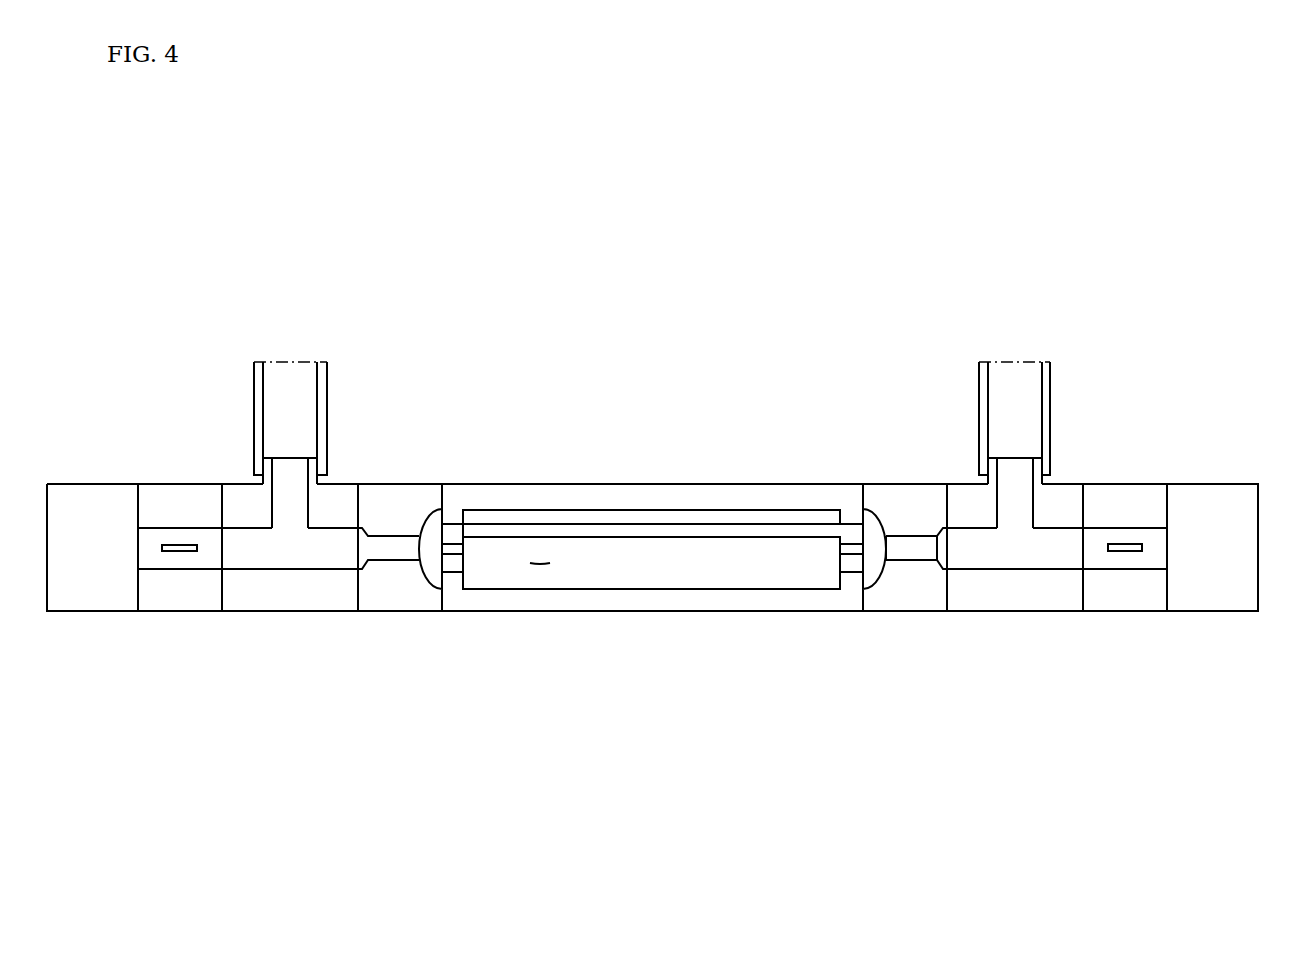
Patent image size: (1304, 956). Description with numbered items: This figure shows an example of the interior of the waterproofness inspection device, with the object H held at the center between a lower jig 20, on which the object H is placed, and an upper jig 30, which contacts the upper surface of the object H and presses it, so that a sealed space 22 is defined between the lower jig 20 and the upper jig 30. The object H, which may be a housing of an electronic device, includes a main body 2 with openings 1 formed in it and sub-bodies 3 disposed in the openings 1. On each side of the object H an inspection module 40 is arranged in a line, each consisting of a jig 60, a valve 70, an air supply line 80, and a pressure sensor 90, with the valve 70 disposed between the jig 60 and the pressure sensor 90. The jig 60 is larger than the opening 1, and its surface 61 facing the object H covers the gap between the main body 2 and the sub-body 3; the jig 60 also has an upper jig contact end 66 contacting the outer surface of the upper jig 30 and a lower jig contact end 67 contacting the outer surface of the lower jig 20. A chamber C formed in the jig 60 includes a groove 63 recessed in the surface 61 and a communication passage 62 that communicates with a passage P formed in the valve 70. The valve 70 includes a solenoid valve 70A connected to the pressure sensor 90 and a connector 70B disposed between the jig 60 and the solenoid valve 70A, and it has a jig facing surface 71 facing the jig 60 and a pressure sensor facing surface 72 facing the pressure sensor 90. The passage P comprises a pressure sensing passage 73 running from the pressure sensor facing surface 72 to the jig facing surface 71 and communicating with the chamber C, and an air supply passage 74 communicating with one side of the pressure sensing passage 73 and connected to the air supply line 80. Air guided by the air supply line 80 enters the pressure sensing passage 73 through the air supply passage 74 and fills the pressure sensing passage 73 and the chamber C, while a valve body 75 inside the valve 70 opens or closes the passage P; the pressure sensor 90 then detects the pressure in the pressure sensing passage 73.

The inspection module 40 is at (1166, 425).
The pressure sensor 90 is at (93, 603).
The valve 70 is at (167, 660).
The solenoid valve 70A is at (183, 603).
The connector 70B is at (288, 603).
The jig facing surface 71 is at (952, 603).
The pressure sensor facing surface 72 is at (1164, 597).
The pressure sensing passage 73 is at (1067, 540).
The air supply passage 74 is at (1025, 505).
The valve body 75 is at (1125, 543).
The air supply line 80 is at (254, 404).
The passage P is at (1063, 387).
The jig 60 is at (397, 603).
The surface 61 is at (867, 588).
The communication passage 62 is at (920, 545).
The groove 63 is at (882, 536).
The upper jig contact end 66 is at (869, 506).
The lower jig contact end 67 is at (867, 598).
The chamber C is at (880, 390).
The upper jig 30 is at (745, 497).
The lower jig 20 is at (727, 603).
The sealed space 22 is at (541, 566).
The opening 1 is at (454, 542).
The main body 2 is at (548, 532).
The sub-body 3 is at (465, 548).
The object H is at (487, 432).